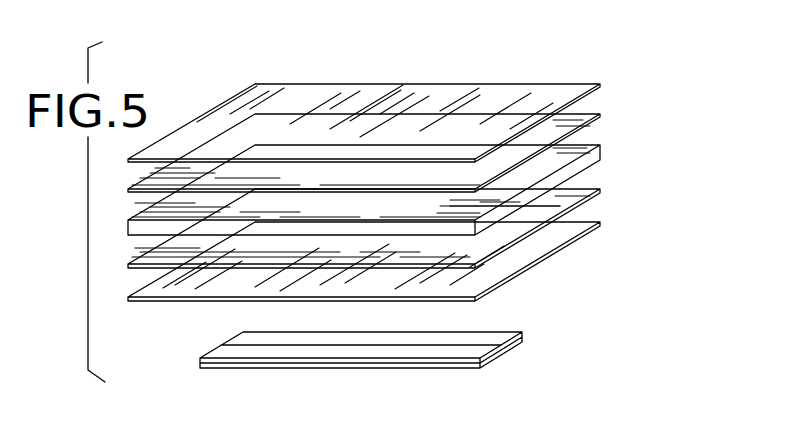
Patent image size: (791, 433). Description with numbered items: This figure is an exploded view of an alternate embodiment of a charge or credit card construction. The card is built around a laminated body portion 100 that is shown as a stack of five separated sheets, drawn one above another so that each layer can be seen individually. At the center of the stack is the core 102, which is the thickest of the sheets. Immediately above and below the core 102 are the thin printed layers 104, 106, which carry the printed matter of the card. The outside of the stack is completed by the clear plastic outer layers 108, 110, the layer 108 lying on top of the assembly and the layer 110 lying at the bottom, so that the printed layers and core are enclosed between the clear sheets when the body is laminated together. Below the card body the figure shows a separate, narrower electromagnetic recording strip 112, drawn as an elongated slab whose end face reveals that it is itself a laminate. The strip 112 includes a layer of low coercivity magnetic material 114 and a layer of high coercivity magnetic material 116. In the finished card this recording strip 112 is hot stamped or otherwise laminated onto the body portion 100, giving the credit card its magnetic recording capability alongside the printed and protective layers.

The laminated body portion 100 is at (616, 67).
The clear plastic outer layer 108 is at (604, 85).
The thin printed layer 104 is at (604, 115).
The core 102 is at (604, 150).
The thin printed layer 106 is at (604, 190).
The clear plastic outer layer 110 is at (604, 226).
The electromagnetic recording strip 112 is at (521, 319).
The low coercivity magnetic material layer 114 is at (500, 348).
The high coercivity magnetic material layer 116 is at (505, 345).